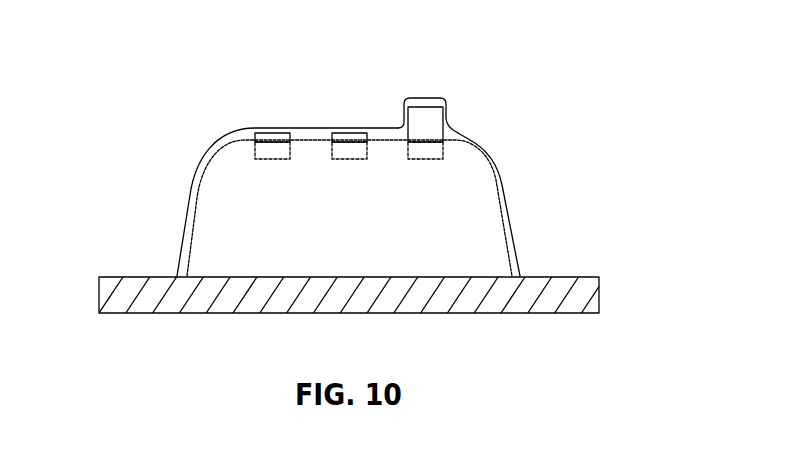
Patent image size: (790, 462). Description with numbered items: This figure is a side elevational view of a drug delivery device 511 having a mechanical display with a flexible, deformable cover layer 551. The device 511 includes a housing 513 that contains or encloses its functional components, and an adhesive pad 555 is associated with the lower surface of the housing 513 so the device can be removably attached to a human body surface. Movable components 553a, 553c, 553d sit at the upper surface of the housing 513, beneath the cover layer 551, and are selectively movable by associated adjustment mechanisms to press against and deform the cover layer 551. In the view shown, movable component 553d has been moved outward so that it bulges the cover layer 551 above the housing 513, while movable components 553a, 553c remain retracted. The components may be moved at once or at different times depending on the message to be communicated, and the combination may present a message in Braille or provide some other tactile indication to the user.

The drug delivery device 511 is at (166, 125).
The housing 513 is at (468, 143).
The cover layer 551 is at (426, 98).
The movable component 553a is at (272, 133).
The movable component 553c is at (344, 133).
The movable component 553d is at (420, 123).
The adhesive pad 555 is at (551, 277).